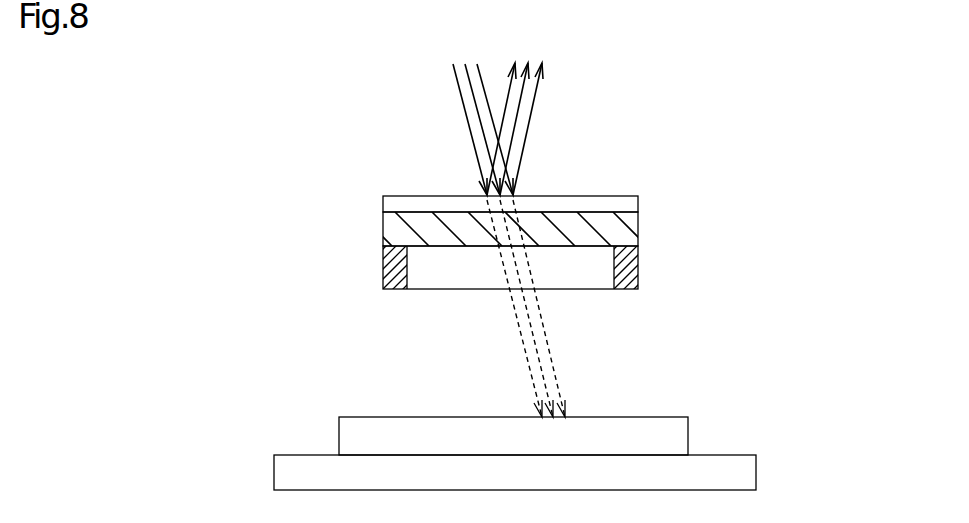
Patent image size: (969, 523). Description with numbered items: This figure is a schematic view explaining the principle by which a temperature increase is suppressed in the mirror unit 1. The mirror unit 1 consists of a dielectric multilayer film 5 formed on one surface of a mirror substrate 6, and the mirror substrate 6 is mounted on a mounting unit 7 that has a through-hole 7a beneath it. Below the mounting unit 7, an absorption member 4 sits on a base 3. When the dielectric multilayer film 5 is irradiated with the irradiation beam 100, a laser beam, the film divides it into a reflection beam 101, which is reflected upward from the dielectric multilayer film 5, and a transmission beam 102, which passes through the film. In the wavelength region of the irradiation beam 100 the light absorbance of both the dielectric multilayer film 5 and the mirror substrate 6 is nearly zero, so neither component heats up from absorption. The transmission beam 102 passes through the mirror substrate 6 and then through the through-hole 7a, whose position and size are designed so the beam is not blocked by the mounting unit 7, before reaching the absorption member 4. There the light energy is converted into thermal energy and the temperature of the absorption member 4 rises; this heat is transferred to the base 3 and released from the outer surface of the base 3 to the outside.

The mirror unit 1 is at (496, 217).
The base 3 is at (756, 458).
The absorption member 4 is at (688, 423).
The dielectric multilayer film 5 is at (383, 200).
The mirror substrate 6 is at (383, 230).
The mounting unit 7 is at (382, 262).
The through-hole 7a is at (444, 277).
The irradiation beam 100 is at (467, 117).
The reflection beam 101 is at (533, 105).
The transmission beam 102 is at (547, 333).